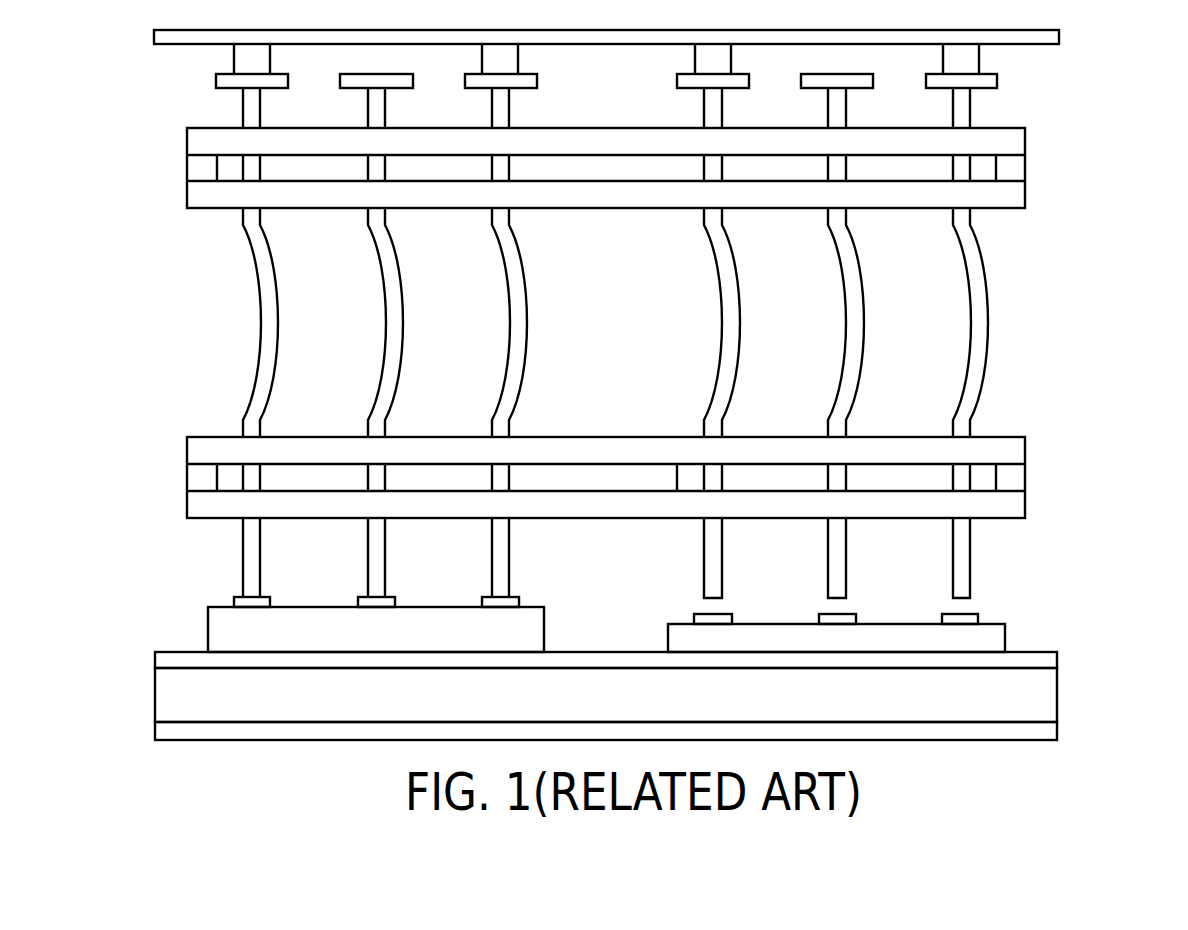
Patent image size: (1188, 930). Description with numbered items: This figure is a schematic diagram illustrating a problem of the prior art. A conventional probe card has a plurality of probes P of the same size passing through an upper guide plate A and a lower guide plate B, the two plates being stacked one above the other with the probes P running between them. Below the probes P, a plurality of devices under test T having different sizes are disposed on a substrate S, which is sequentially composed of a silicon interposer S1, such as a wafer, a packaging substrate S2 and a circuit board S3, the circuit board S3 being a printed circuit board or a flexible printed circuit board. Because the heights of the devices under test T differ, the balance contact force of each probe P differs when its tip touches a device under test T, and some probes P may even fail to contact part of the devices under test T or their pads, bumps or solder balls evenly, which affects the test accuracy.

The upper guide plate A is at (1032, 128).
The lower guide plate B is at (1032, 437).
The probe P is at (984, 317).
The device under test T is at (215, 628).
The substrate S is at (663, 696).
The silicon interposer S1 is at (1057, 660).
The packaging substrate S2 is at (1057, 696).
The circuit board S3 is at (642, 732).